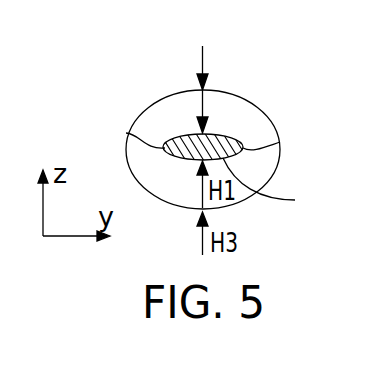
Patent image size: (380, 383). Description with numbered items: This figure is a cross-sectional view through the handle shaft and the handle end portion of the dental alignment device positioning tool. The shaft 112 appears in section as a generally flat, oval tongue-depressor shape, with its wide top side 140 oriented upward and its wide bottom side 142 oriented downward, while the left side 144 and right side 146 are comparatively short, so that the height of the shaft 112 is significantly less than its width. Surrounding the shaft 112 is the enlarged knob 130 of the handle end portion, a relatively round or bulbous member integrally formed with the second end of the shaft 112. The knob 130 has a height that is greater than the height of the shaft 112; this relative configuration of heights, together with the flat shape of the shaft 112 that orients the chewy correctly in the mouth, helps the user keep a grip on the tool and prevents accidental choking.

The shaft 112 is at (277, 188).
The enlarged knob 130 is at (250, 102).
The top side 140 is at (172, 95).
The bottom side 142 is at (193, 158).
The left side 144 is at (126, 133).
The right side 146 is at (280, 142).